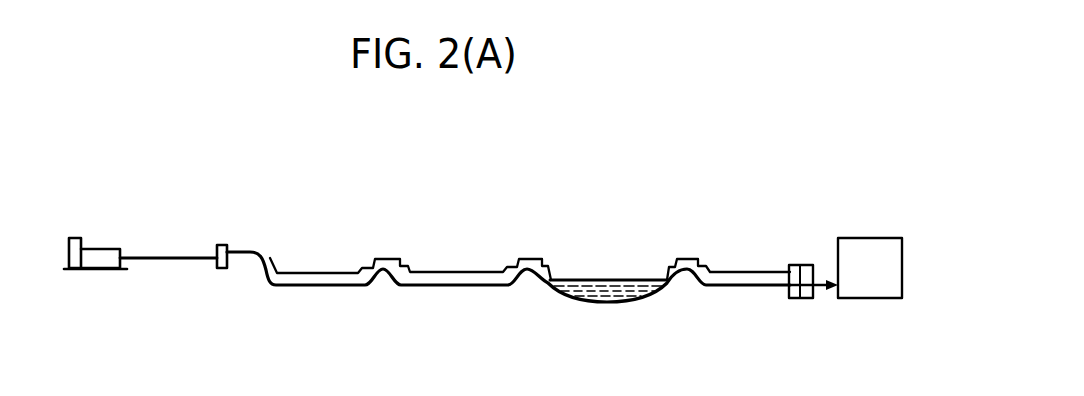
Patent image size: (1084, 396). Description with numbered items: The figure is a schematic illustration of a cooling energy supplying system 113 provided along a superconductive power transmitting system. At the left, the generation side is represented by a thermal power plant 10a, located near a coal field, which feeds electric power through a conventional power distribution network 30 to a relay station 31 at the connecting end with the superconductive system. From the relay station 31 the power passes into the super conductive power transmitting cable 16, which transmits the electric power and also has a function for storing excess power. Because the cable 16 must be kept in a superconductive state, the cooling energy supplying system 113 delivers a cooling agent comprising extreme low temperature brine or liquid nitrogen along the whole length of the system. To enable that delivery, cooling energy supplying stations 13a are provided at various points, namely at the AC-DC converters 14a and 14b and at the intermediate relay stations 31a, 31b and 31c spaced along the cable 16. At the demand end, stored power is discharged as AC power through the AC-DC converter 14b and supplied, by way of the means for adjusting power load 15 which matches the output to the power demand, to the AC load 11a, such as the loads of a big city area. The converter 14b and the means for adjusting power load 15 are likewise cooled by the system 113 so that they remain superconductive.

The cooling energy supplying system 113 is at (429, 135).
The thermal power plant 10a is at (101, 252).
The AC load 11a is at (873, 300).
The cooling energy supplying station 13a is at (682, 260).
The AC-DC converter 14a is at (233, 246).
The AC-DC converter 14b is at (808, 265).
The means for adjusting power load 15 is at (795, 264).
The super conductive power transmitting cable 16 is at (328, 288).
The power distribution network 30 is at (158, 257).
The relay station 31 is at (212, 243).
The relay station 31a is at (403, 260).
The relay station 31b is at (545, 260).
The relay station 31c is at (703, 262).